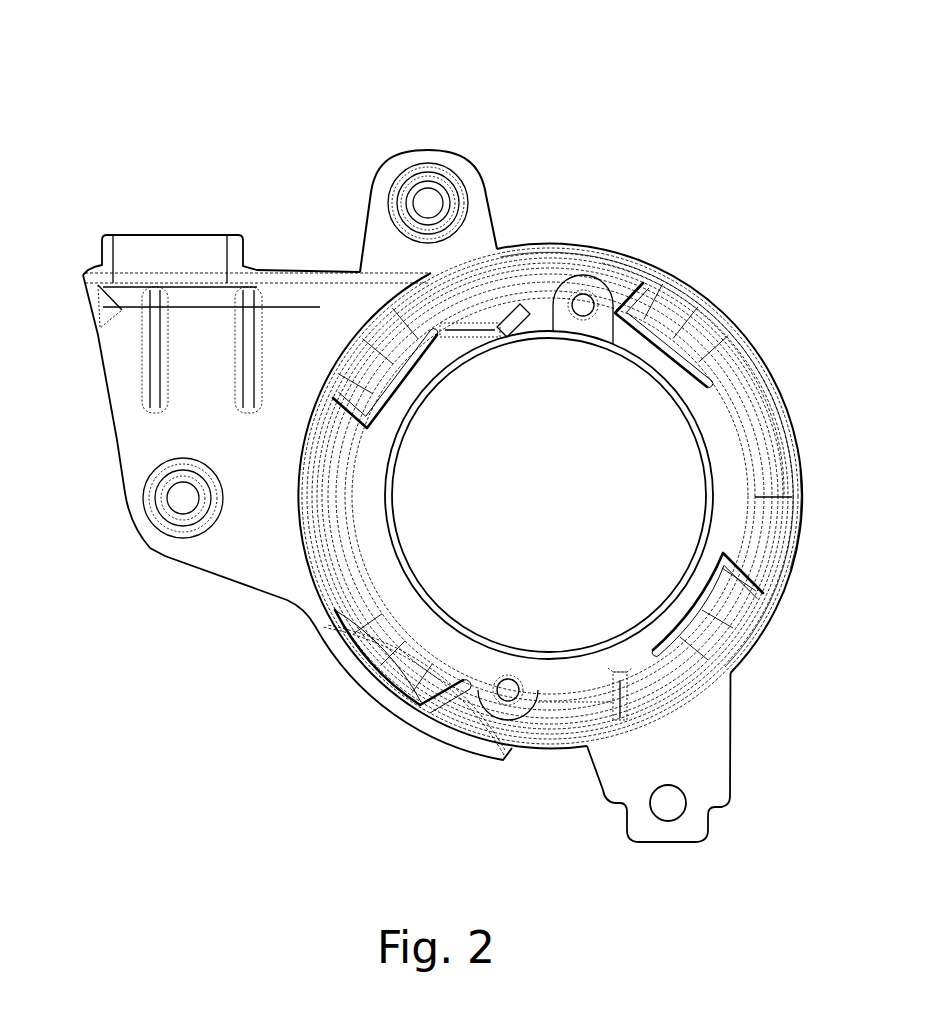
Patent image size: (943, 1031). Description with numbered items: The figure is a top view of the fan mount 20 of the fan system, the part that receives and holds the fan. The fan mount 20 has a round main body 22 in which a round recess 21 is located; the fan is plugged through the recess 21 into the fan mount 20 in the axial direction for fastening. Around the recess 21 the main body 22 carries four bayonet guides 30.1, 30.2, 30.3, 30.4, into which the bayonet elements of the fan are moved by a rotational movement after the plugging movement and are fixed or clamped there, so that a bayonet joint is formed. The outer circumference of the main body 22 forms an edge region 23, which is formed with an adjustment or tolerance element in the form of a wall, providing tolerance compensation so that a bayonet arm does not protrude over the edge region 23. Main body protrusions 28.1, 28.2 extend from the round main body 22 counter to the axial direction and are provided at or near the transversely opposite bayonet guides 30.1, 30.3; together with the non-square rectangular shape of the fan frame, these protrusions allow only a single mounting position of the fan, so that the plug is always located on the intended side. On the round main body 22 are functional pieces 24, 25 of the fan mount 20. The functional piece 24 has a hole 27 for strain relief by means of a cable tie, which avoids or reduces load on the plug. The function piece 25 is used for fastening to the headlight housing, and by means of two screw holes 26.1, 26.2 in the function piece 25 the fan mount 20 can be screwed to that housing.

The fan mount 20 is at (647, 140).
The recess 21 is at (544, 510).
The main body 22 is at (730, 440).
The edge region 23 is at (802, 535).
The functional piece 24 is at (730, 750).
The function piece 25 is at (258, 548).
The screw hole 26.1 is at (183, 498).
The screw hole 26.2 is at (432, 200).
The hole 27 is at (670, 810).
The main body protrusion 28.1 is at (570, 708).
The main body protrusion 28.2 is at (500, 322).
The bayonet guide 30.1 is at (398, 378).
The bayonet guide 30.2 is at (682, 357).
The bayonet guide 30.3 is at (687, 603).
The bayonet guide 30.4 is at (400, 633).